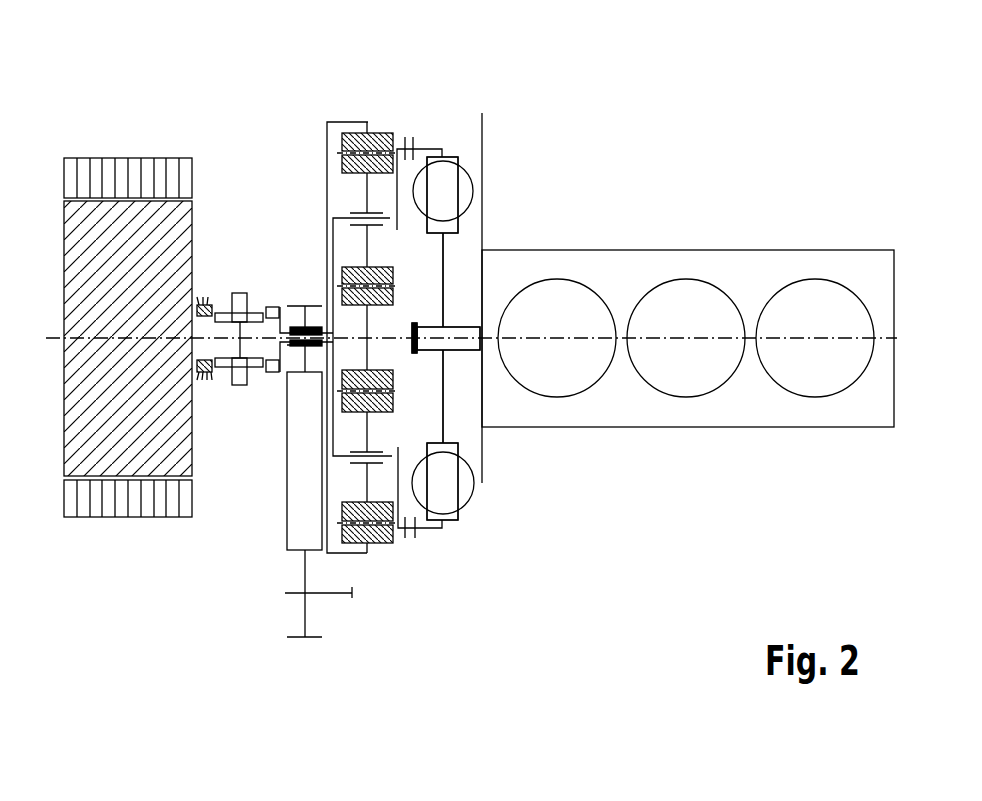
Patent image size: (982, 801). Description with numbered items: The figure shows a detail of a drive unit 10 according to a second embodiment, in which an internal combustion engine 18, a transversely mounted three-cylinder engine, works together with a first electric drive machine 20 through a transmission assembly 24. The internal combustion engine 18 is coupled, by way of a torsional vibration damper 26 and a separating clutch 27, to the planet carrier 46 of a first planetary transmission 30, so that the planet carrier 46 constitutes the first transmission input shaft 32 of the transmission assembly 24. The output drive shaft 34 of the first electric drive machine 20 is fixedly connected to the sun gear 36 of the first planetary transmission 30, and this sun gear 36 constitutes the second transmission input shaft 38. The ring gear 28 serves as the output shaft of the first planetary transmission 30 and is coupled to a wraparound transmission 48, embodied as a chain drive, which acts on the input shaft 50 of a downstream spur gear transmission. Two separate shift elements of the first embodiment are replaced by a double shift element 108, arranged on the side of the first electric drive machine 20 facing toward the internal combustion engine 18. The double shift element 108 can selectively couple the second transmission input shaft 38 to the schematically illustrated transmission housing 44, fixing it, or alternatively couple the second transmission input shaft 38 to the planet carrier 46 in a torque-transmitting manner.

The drive unit 10 is at (705, 100).
The internal combustion engine 18 is at (800, 250).
The first electric drive machine 20 is at (132, 155).
The transmission assembly 24 is at (562, 140).
The torsional vibration damper 26 is at (475, 195).
The separating clutch 27 is at (410, 132).
The ring gear 28 is at (327, 140).
The first planetary transmission 30 is at (368, 107).
The first transmission input shaft 32 is at (442, 338).
The output drive shaft 34 is at (203, 343).
The sun gear 36 is at (368, 317).
The second transmission input shaft 38 is at (446, 338).
The transmission housing 44 is at (202, 303).
The planet carrier 46 is at (425, 157).
The wraparound transmission 48 is at (268, 543).
The input shaft 50 is at (330, 597).
The double shift element 108 is at (238, 443).